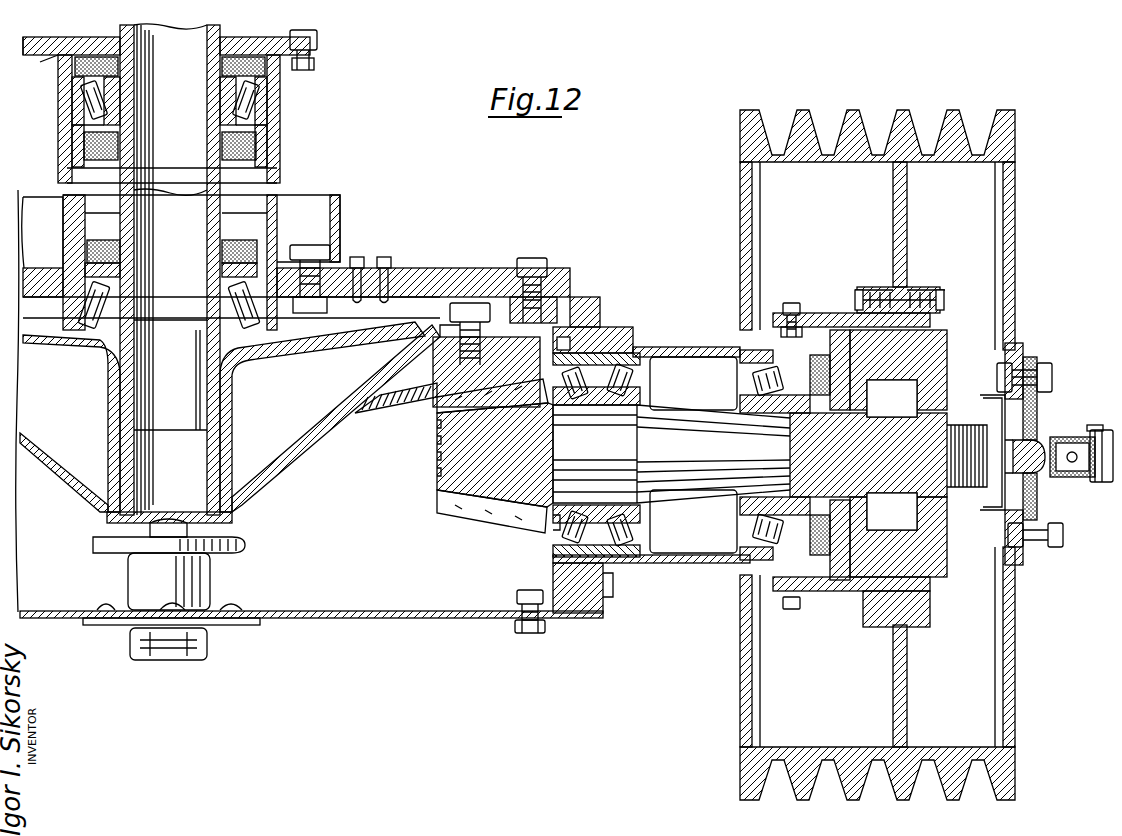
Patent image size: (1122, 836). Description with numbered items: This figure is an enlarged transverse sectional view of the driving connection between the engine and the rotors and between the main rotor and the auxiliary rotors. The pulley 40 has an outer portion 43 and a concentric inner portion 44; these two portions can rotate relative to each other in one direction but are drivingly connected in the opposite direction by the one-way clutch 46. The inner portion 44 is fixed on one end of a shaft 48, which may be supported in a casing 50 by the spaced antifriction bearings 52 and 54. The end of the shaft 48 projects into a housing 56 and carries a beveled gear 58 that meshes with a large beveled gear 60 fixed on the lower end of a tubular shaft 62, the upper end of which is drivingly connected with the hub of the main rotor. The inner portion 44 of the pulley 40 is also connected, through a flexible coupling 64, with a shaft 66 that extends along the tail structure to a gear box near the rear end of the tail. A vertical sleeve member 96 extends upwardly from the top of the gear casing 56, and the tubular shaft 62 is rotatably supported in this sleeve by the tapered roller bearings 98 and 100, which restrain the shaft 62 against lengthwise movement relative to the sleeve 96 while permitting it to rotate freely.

The pulley 40 is at (870, 116).
The outer portion 43 is at (832, 317).
The inner portion 44 is at (945, 340).
The one-way clutch 46 is at (930, 587).
The shaft 48 is at (672, 422).
The casing 50 is at (711, 568).
The antifriction bearing 52 is at (640, 347).
The antifriction bearing 54 is at (750, 345).
The housing 56 is at (416, 620).
The beveled gear 58 is at (495, 515).
The large beveled gear 60 is at (396, 414).
The tubular shaft 62 is at (228, 385).
The flexible coupling 64 is at (1050, 411).
The shaft 66 is at (1105, 480).
The vertical sleeve member 96 is at (276, 160).
The tapered roller bearing 98 is at (268, 100).
The tapered roller bearing 100 is at (345, 255).